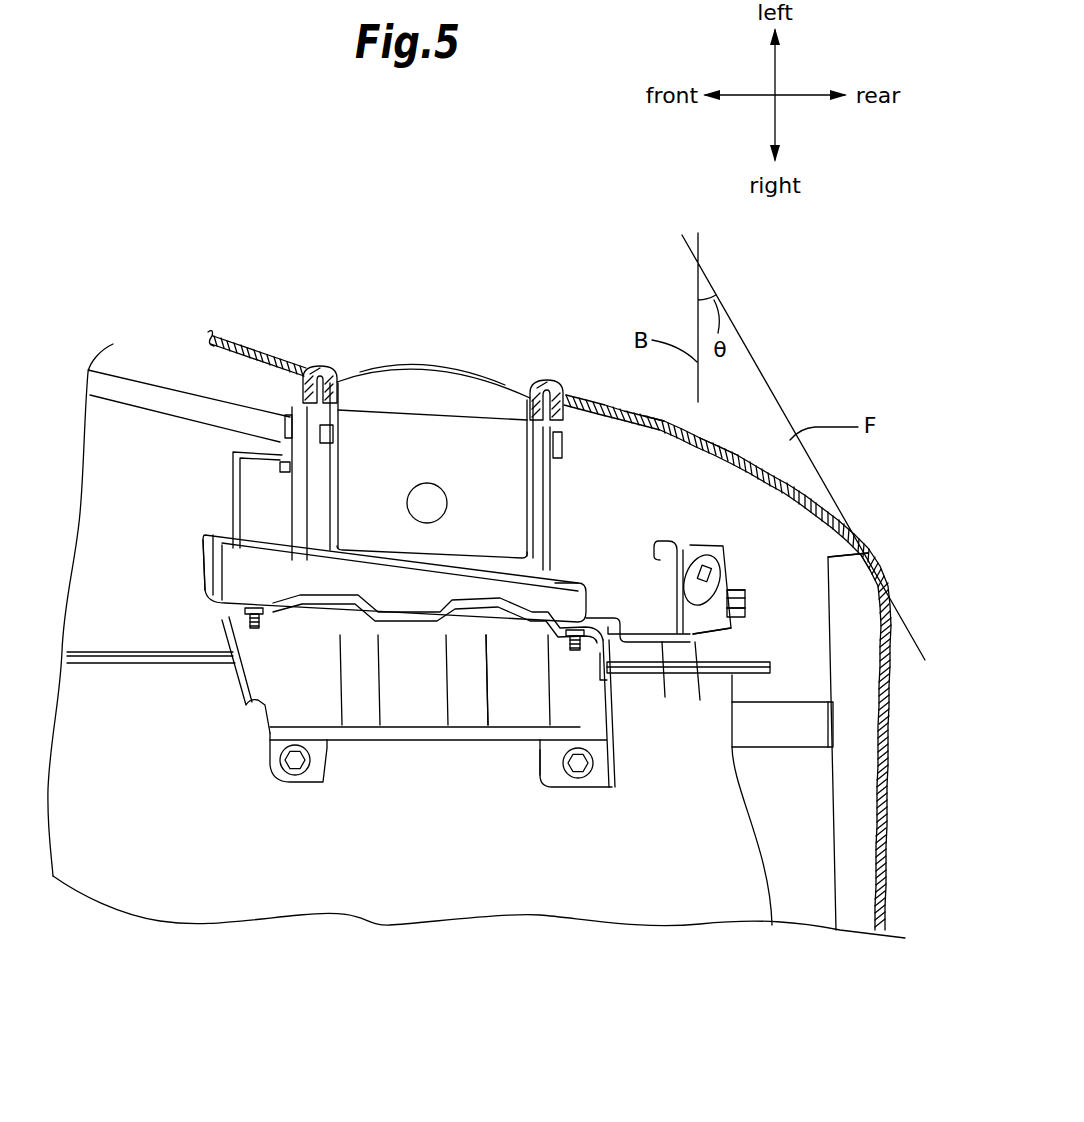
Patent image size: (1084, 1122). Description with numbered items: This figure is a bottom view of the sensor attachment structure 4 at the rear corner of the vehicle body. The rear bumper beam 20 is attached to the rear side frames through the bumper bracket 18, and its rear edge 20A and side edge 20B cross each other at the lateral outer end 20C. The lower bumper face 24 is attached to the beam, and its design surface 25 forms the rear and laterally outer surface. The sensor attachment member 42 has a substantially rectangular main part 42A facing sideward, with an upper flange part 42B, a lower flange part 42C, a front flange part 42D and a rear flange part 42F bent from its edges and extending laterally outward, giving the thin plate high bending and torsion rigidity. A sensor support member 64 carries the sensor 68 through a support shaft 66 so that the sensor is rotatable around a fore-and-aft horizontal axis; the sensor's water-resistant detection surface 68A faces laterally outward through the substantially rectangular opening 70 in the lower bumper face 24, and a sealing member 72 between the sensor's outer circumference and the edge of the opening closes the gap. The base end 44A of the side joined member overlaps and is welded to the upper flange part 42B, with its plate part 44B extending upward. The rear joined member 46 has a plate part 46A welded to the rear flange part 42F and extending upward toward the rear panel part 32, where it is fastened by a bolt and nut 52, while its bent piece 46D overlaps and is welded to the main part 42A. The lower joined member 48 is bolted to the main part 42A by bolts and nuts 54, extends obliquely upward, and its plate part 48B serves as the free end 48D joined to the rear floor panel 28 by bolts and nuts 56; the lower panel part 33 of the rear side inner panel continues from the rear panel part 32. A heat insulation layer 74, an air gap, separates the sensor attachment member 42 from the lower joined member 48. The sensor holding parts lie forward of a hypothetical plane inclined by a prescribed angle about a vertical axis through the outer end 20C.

The sensor attachment structure 4 is at (185, 540).
The bumper bracket 18 is at (775, 747).
The rear bumper beam 20 is at (883, 827).
The rear edge 20A is at (886, 637).
The side edge 20B is at (843, 557).
The outer end 20C is at (870, 550).
The lower bumper face 24 is at (725, 452).
The design surface 25 is at (665, 420).
The rear floor panel 28 is at (750, 878).
The rear panel part 32 is at (730, 650).
The lower panel part 33 is at (165, 455).
The sensor attachment member 42 is at (480, 544).
The main part 42A is at (660, 548).
The upper flange part 42B is at (632, 567).
The lower flange part 42C is at (570, 583).
The front flange part 42D is at (213, 567).
The rear flange part 42F is at (720, 645).
The base end 44A is at (720, 612).
The plate part 44B is at (747, 593).
The rear joined member 46 is at (693, 643).
The plate part 46A is at (700, 645).
The bent piece 46D is at (670, 677).
The lower joined member 48 is at (472, 735).
The plate part 48B is at (323, 760).
The free end 48D is at (603, 763).
The bolt and nut 52 is at (730, 600).
The bolts and nuts 54 is at (252, 635).
The bolts and nuts 56 is at (290, 777).
The sensor support member 64 is at (557, 483).
The support shaft 66 is at (312, 433).
The sensor 68 is at (465, 392).
The detection surface 68A is at (417, 368).
The opening 70 is at (330, 375).
The sealing member 72 is at (553, 385).
The heat insulation layer 74 is at (515, 627).